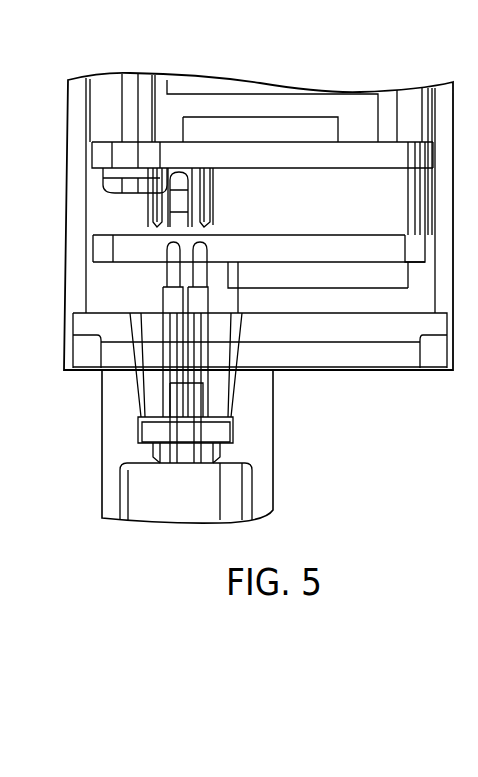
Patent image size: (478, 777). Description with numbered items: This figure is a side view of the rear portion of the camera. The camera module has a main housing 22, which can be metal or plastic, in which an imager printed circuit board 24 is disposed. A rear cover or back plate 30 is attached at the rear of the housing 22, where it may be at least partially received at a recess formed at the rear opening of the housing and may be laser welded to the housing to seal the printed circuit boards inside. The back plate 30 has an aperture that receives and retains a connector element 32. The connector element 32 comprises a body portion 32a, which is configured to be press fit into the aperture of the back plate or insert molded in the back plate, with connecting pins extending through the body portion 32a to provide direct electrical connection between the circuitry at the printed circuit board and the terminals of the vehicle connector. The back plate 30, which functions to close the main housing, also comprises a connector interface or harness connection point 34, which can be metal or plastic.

The main housing 22 is at (67, 217).
The imager printed circuit board 24 is at (250, 150).
The back plate 30 is at (347, 371).
The connector element 32 is at (183, 459).
The body portion 32a is at (167, 438).
The connector interface 34 is at (100, 480).